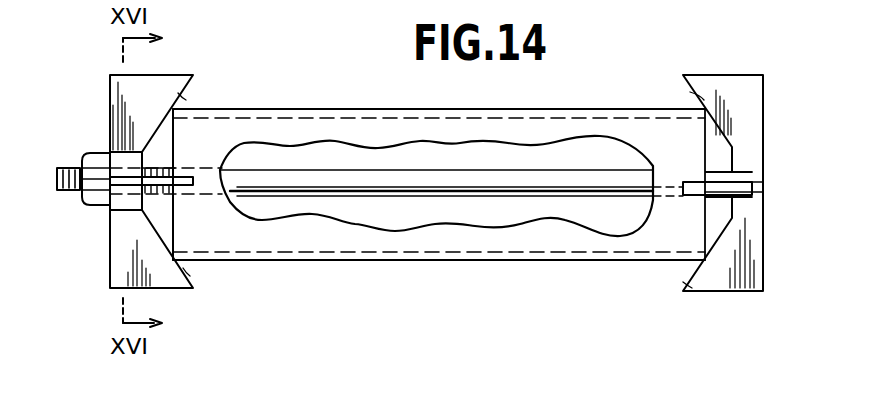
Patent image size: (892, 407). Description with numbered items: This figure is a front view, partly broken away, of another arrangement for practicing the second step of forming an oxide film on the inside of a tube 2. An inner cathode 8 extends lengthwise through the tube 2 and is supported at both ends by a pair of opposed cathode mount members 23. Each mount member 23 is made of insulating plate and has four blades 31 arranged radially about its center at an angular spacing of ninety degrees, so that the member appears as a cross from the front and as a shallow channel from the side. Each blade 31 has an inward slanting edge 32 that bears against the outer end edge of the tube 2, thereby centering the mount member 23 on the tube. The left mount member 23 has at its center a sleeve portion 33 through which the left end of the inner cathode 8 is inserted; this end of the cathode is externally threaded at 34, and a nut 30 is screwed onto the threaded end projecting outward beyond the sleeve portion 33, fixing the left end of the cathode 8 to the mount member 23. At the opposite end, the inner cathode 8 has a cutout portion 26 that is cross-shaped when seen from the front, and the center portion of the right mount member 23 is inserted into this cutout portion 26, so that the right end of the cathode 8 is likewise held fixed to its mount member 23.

The tube 2 is at (313, 108).
The inner cathode 8 is at (340, 176).
The cathode mount member 23 is at (113, 87).
The cutout portion 26 is at (765, 190).
The nut 30 is at (97, 160).
The blade 31 is at (184, 190).
The inward slanting edge 32 is at (186, 100).
The sleeve portion 33 is at (122, 210).
The externally threaded portion 34 is at (63, 167).